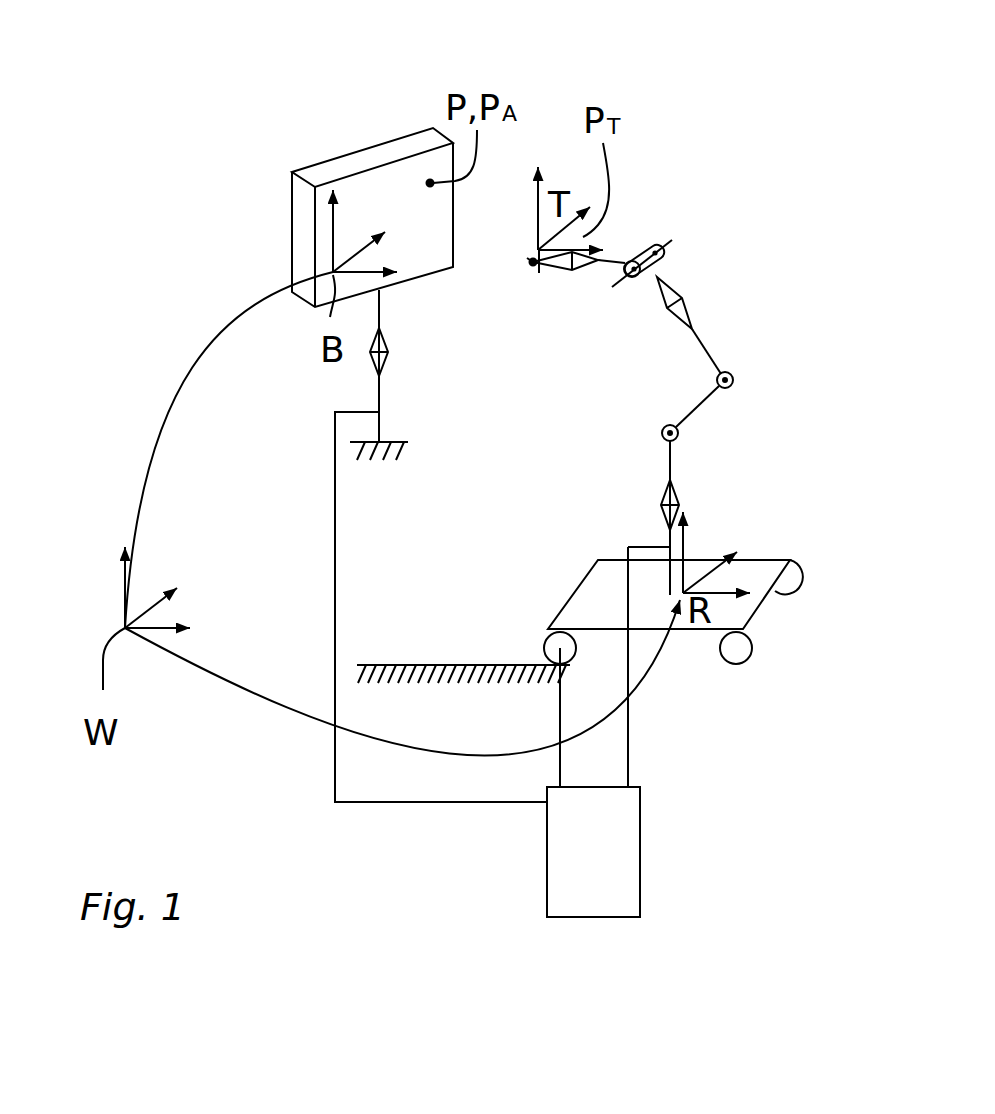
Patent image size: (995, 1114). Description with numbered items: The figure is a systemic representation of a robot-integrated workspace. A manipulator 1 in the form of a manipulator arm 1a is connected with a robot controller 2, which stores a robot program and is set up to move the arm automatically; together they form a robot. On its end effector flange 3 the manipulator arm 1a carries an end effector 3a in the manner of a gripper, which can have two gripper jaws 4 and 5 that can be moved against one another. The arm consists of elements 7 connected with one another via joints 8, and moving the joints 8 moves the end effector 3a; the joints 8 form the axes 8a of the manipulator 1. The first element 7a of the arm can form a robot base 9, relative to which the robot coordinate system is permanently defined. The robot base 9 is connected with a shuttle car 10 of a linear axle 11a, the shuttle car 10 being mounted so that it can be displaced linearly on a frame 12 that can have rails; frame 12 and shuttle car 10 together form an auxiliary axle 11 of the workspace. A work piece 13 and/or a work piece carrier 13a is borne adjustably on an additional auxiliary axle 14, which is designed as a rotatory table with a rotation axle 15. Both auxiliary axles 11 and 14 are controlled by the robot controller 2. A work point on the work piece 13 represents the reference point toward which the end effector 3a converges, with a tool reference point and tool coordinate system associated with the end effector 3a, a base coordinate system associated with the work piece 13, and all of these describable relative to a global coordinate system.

The manipulator 1 is at (646, 315).
The manipulator arm 1a is at (755, 220).
The robot controller 2 is at (617, 853).
The end effector flange 3 is at (549, 335).
The end effector 3a is at (515, 277).
The gripper jaw 4 is at (538, 268).
The gripper jaw 5 is at (530, 258).
The elements 7 is at (650, 387).
The first element 7a is at (705, 347).
The joints 8 is at (705, 379).
The axes 8a is at (663, 316).
The robot base 9 is at (673, 643).
The shuttle car 10 is at (730, 618).
The auxiliary axle 11 is at (449, 562).
The linear axle 11a is at (520, 610).
The frame 12 is at (463, 665).
The work piece 13 is at (360, 168).
The work piece carrier 13a is at (377, 153).
The auxiliary axle 14 is at (379, 393).
The rotation axle 15 is at (389, 365).